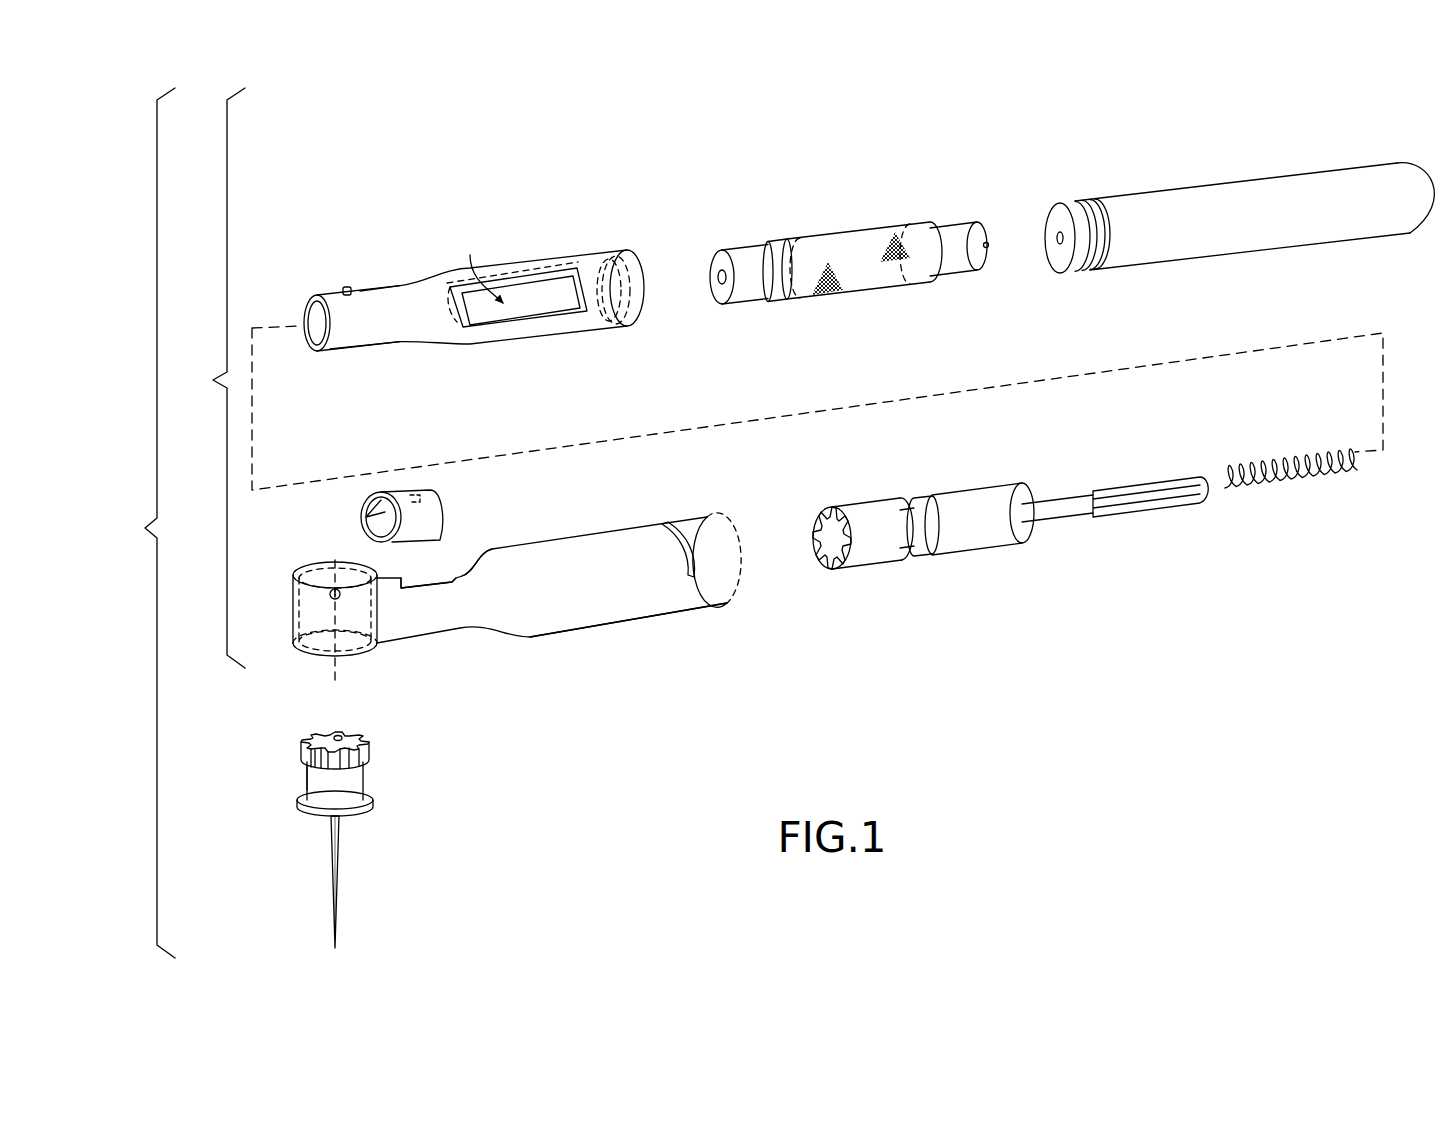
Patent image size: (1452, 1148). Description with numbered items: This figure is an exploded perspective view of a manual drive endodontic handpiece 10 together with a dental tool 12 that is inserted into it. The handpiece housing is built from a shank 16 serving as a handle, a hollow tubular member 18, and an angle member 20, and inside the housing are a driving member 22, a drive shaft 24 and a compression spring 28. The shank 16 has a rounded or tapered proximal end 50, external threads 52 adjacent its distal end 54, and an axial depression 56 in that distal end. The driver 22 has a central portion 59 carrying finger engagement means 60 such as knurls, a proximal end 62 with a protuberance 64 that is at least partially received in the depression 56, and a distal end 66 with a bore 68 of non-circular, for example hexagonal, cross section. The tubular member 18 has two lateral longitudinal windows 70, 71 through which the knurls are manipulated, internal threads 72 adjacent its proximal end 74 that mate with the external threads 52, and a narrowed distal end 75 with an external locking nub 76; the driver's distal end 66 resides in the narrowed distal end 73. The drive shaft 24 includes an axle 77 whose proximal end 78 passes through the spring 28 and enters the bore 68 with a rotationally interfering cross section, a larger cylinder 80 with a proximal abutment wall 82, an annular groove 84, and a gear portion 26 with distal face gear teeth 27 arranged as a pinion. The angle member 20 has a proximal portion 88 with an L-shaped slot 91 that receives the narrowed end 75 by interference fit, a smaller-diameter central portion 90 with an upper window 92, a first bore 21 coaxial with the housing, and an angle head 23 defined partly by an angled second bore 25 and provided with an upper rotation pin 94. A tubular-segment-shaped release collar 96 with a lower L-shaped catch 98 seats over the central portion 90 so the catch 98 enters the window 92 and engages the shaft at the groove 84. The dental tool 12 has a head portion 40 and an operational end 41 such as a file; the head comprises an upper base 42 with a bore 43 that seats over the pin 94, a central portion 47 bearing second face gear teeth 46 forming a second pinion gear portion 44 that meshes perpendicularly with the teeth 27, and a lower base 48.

The manual drive endodontic handpiece 10 is at (209, 378).
The dental tool 12 is at (298, 826).
The shank 16 is at (1226, 211).
The hollow tubular member 18 is at (532, 262).
The angle member 20 is at (574, 574).
The first bore 21 is at (738, 572).
The driving member (driver) 22 is at (845, 241).
The angle head 23 is at (298, 568).
The drive shaft 24 is at (1115, 492).
The second bore 25 is at (332, 632).
The gear portion 26 is at (843, 519).
The gear teeth 27 is at (822, 520).
The compression spring 28 is at (1298, 480).
The head portion 40 is at (358, 790).
The operational end 41 is at (337, 878).
The upper base 42 is at (315, 740).
The bore 43 is at (342, 735).
The second pinion gear portion 44 is at (370, 752).
The second face gear teeth 46 is at (308, 760).
The central portion 47 is at (305, 776).
The lower base 48 is at (368, 806).
The proximal end 50 is at (1402, 178).
The external threads 52 is at (1078, 205).
The distal end 54 is at (1055, 222).
The axial depression 56 is at (1057, 245).
The central portion 59 is at (868, 226).
The finger engagement means 60 is at (829, 250).
The proximal end 62 is at (957, 232).
The protuberance 64 is at (986, 250).
The distal end 66 is at (739, 251).
The bore 68 is at (718, 276).
The lateral longitudinal window 70 is at (533, 300).
The lateral longitudinal window 71 is at (478, 266).
The internal threads 72 is at (605, 262).
The narrowed distal end 73 is at (378, 300).
The proximal end 74 is at (626, 285).
The narrowed distal end 75 is at (344, 348).
The external locking nub 76 is at (358, 289).
The axle 77 is at (1076, 514).
The proximal end 78 is at (1168, 480).
The cylinder 80 is at (995, 545).
The proximal abutment wall 82 is at (1030, 528).
The annular groove (slot) 84 is at (906, 503).
The proximal portion 88 is at (648, 600).
The central portion 90 is at (457, 612).
The L-shaped slot 91 is at (663, 524).
The upper window 92 is at (430, 580).
The upper rotation pin 94 is at (327, 600).
The release collar (button) 96 is at (444, 497).
The L-shaped catch 98 is at (360, 517).